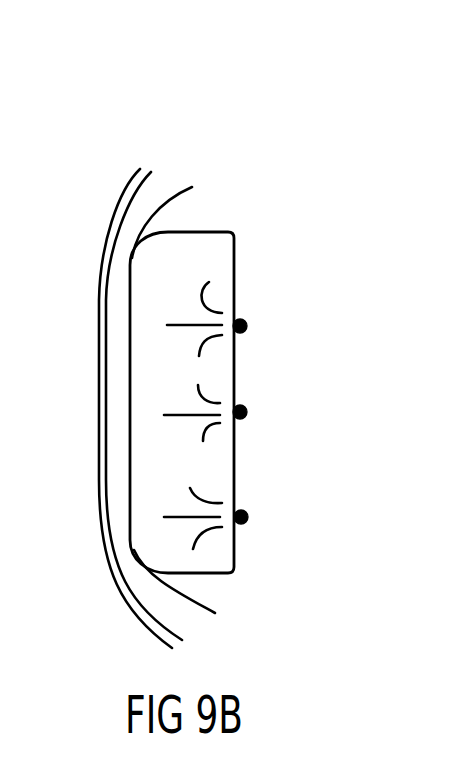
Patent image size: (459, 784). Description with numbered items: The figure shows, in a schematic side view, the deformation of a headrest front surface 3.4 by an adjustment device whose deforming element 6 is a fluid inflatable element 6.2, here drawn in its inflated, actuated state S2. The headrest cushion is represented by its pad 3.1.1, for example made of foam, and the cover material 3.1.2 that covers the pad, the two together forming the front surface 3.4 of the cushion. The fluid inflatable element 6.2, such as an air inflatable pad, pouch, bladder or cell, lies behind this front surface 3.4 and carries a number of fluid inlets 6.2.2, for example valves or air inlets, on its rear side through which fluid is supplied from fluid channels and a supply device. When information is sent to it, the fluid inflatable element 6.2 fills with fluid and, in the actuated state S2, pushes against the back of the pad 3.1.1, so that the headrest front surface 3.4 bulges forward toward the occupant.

The pad 3.1.1 is at (148, 206).
The cover material 3.1.2 is at (114, 220).
The headrest front surface 3.4 is at (117, 313).
The deforming element 6 is at (236, 321).
The fluid inflatable element 6.2 is at (182, 402).
The actuated state S2 is at (193, 248).
The fluid inlet 6.2.2 is at (243, 510).